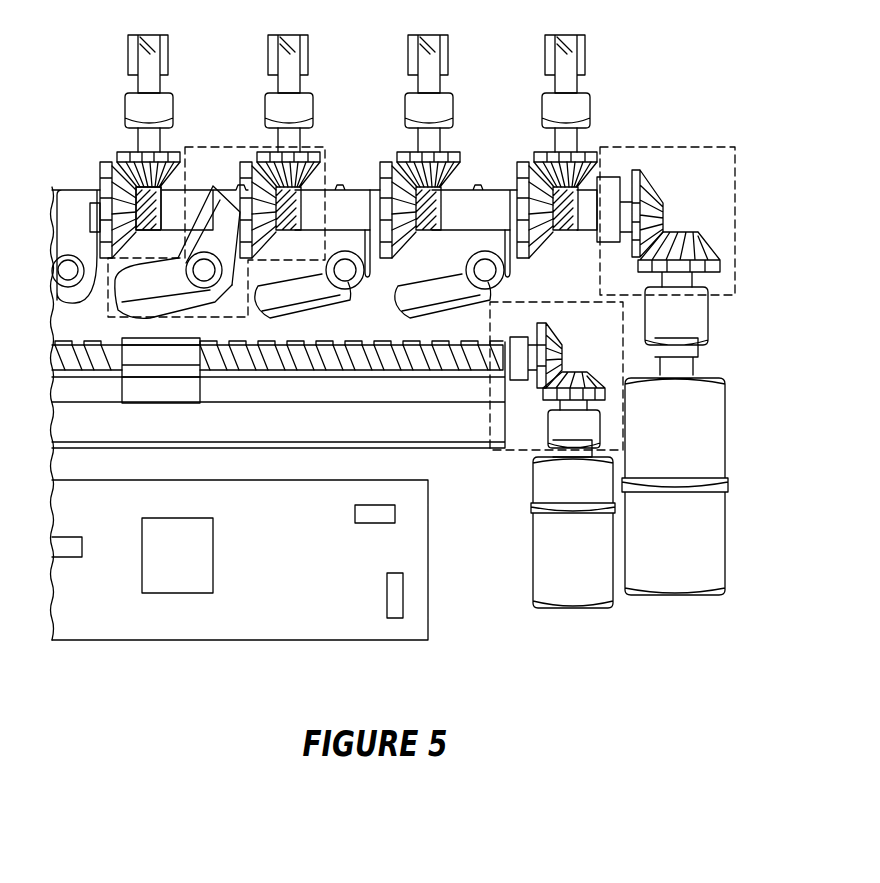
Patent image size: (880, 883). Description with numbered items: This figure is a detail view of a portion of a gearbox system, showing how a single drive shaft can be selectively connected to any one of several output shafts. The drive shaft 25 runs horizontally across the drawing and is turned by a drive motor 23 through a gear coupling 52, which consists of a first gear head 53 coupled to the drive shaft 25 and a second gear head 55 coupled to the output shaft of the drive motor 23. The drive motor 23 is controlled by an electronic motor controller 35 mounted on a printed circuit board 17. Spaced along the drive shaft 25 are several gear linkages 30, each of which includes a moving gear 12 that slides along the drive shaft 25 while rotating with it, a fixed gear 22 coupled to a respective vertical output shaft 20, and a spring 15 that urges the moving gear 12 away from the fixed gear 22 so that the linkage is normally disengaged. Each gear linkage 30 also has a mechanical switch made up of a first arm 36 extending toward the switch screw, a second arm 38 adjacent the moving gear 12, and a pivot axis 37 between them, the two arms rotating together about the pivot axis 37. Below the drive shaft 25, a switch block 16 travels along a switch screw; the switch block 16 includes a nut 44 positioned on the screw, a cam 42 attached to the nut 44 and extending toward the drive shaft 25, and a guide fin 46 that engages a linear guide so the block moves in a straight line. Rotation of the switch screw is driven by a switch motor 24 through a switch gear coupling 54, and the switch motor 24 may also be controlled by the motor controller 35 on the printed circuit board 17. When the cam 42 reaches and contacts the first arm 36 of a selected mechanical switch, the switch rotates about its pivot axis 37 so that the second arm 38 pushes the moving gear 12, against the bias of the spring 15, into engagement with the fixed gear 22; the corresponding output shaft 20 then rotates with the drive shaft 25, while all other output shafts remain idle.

The moving gear 12 is at (236, 147).
The spring 15 is at (318, 205).
The switch block 16 is at (122, 385).
The printed circuit board 17 is at (285, 622).
The output shaft 20 is at (562, 68).
The fixed gear 22 is at (325, 152).
The drive motor 23 is at (708, 552).
The switch motor 24 is at (538, 578).
The drive shaft 25 is at (632, 203).
The gear linkage 30 is at (52, 341).
The electronic motor controller 35 is at (196, 557).
The first arm 36 is at (152, 267).
The pivot axis 37 is at (152, 216).
The second arm 38 is at (223, 202).
The cam 42 is at (122, 337).
The nut 44 is at (172, 356).
The guide fin 46 is at (132, 383).
The gear coupling 52 is at (687, 147).
The first gear head 53 is at (663, 205).
The switch gear coupling 54 is at (522, 452).
The second gear head 55 is at (700, 247).